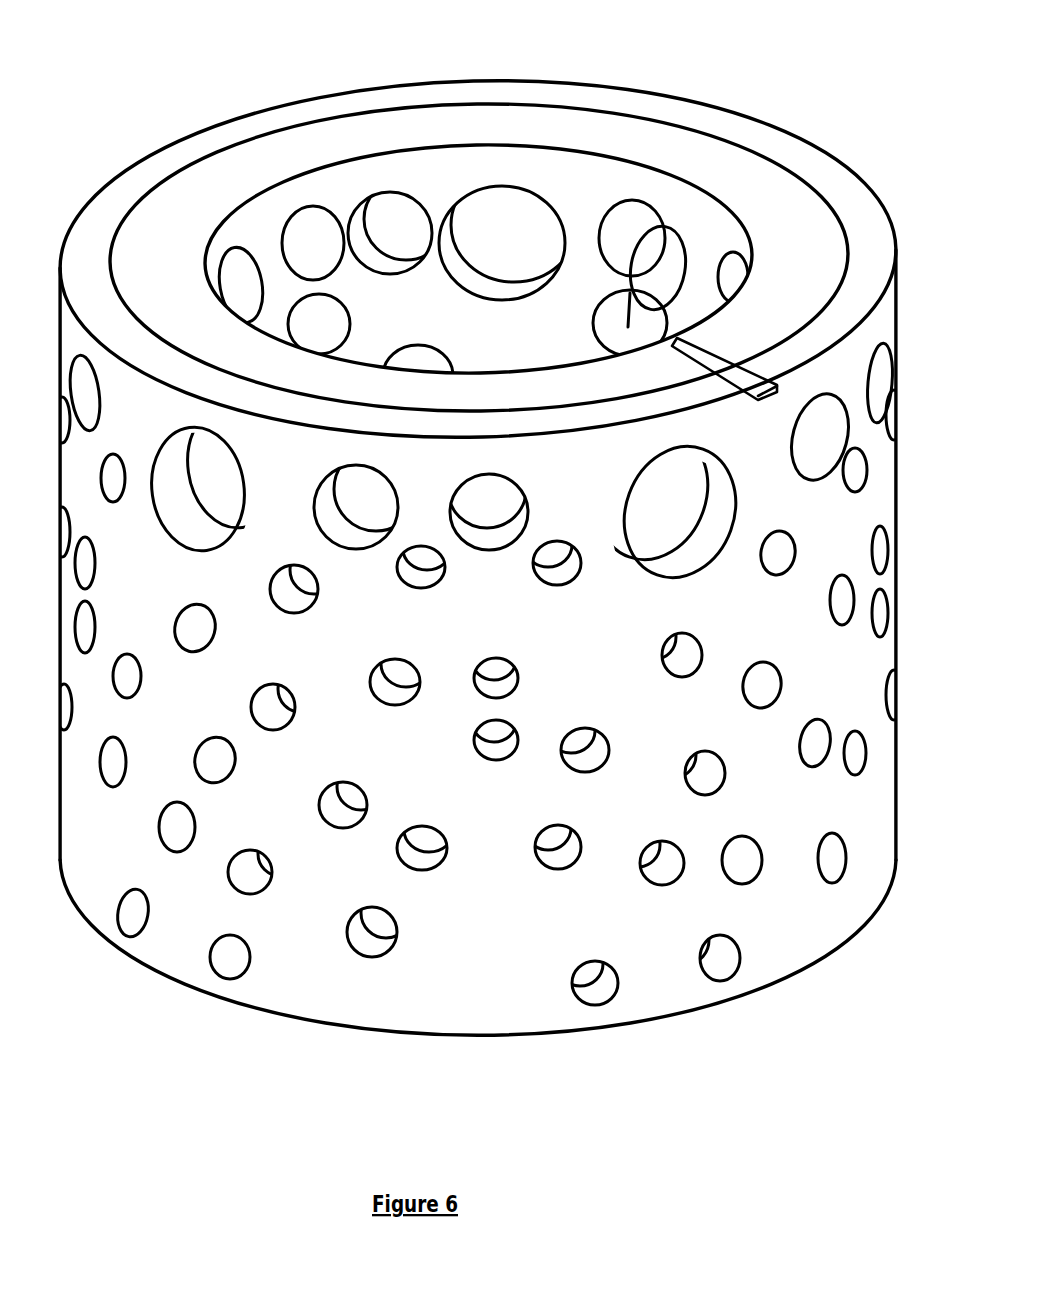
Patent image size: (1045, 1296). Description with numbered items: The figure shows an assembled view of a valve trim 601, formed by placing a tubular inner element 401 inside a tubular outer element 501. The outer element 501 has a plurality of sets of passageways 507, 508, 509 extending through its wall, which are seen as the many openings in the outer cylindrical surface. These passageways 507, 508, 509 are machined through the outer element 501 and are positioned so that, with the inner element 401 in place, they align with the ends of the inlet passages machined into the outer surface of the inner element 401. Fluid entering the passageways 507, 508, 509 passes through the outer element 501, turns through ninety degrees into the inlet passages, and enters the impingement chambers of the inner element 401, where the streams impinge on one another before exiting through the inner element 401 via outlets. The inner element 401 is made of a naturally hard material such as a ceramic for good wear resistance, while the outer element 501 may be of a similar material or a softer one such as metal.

The valve trim 601 is at (803, 108).
The tubular outer element 501 is at (625, 66).
The tubular inner element 401 is at (662, 140).
The passageway 507 is at (119, 935).
The passageway 508 is at (237, 966).
The passageway 509 is at (181, 845).